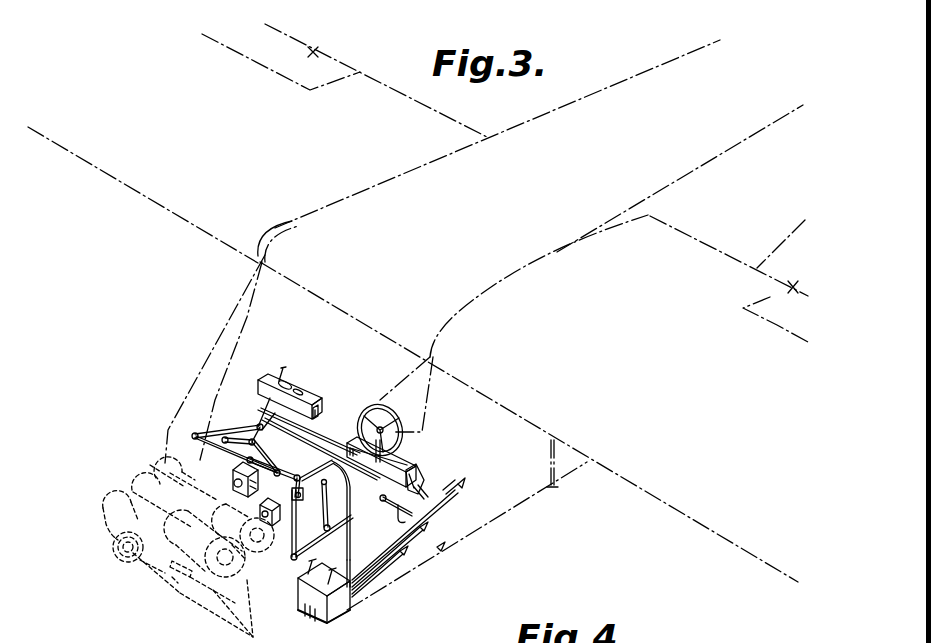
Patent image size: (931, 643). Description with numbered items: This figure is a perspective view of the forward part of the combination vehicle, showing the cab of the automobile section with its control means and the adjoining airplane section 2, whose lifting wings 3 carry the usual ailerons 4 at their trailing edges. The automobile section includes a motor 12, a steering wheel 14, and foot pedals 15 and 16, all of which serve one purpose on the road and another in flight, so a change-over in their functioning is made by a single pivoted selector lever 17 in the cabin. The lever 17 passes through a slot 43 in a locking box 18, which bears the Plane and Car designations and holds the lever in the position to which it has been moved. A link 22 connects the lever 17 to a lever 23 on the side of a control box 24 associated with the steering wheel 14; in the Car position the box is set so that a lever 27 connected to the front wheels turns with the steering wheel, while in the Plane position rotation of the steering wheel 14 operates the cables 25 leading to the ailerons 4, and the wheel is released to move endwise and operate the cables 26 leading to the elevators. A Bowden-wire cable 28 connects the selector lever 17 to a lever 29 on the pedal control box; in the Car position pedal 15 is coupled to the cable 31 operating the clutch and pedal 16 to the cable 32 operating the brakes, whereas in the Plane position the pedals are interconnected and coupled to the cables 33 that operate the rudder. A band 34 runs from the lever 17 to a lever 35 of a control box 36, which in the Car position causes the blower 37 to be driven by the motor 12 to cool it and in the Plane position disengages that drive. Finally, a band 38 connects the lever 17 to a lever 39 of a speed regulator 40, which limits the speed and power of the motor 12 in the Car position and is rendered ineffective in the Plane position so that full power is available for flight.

The airplane section 2 is at (582, 103).
The lifting wings 3 is at (190, 205).
The ailerons 4 is at (320, 52).
The motor 12 is at (122, 526).
The steering wheel 14 is at (391, 416).
The foot pedal 15 is at (312, 610).
The foot pedal 16 is at (305, 575).
The selector lever 17 is at (285, 377).
The locking box 18 is at (324, 408).
The link 22 is at (310, 438).
The lever 23 is at (380, 485).
The control box 24 is at (420, 465).
The cables 25 is at (452, 498).
The cables 26 is at (337, 518).
The lever 27 is at (430, 496).
The cable 28 is at (358, 440).
The lever 29 is at (344, 616).
The cable 31 is at (405, 576).
The cable 32 is at (400, 547).
The cables 33 is at (385, 578).
The band 34 is at (252, 438).
The lever 35 is at (300, 477).
The control box 36 is at (283, 513).
The blower 37 is at (247, 575).
The band 38 is at (214, 426).
The lever 39 is at (268, 462).
The speed regulator 40 is at (241, 497).
The slot 43 is at (305, 398).